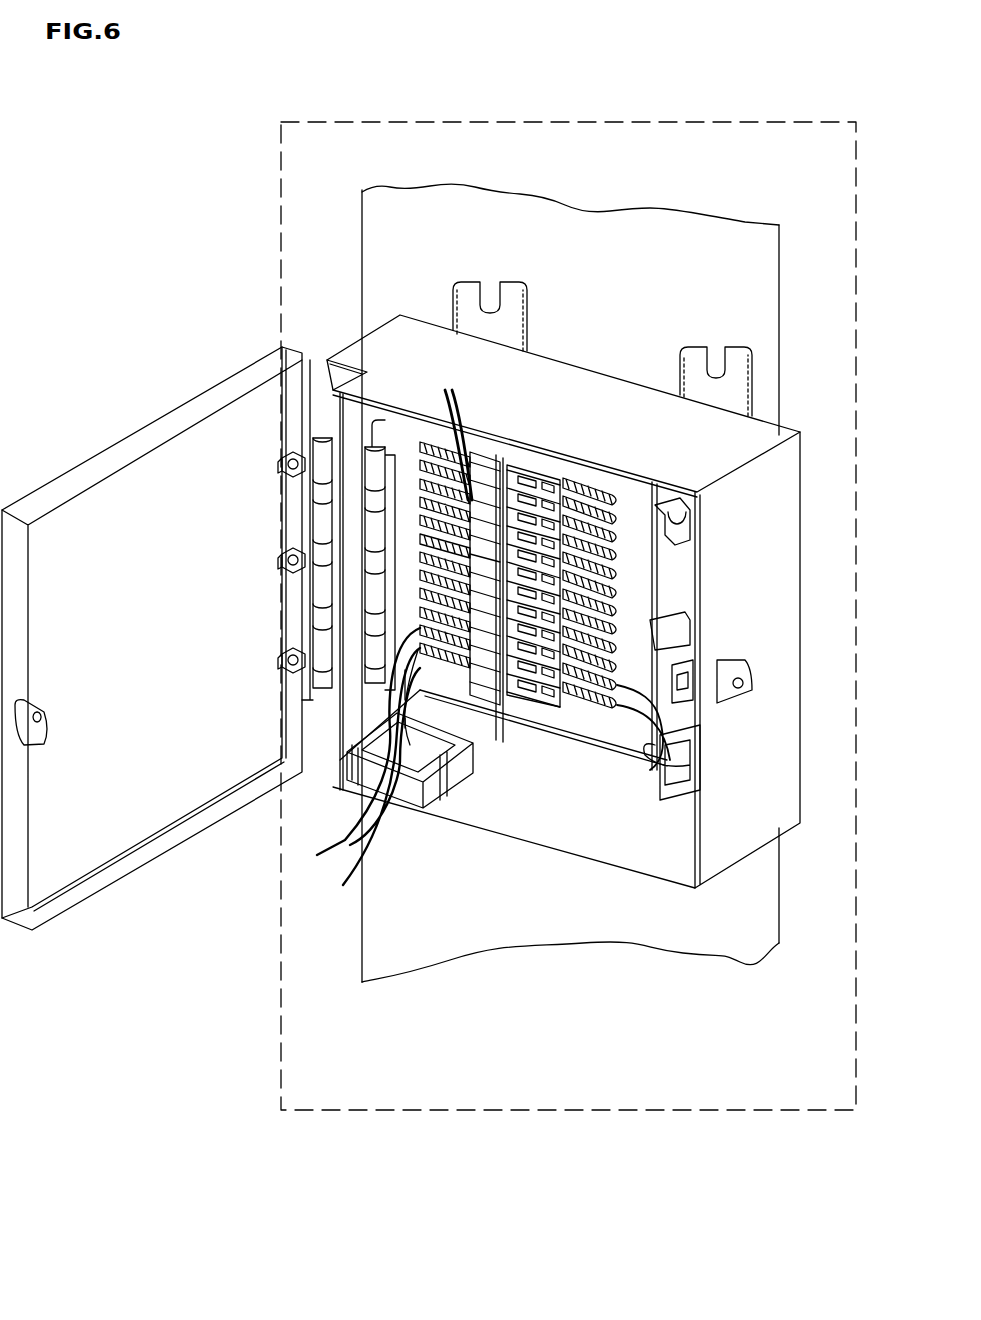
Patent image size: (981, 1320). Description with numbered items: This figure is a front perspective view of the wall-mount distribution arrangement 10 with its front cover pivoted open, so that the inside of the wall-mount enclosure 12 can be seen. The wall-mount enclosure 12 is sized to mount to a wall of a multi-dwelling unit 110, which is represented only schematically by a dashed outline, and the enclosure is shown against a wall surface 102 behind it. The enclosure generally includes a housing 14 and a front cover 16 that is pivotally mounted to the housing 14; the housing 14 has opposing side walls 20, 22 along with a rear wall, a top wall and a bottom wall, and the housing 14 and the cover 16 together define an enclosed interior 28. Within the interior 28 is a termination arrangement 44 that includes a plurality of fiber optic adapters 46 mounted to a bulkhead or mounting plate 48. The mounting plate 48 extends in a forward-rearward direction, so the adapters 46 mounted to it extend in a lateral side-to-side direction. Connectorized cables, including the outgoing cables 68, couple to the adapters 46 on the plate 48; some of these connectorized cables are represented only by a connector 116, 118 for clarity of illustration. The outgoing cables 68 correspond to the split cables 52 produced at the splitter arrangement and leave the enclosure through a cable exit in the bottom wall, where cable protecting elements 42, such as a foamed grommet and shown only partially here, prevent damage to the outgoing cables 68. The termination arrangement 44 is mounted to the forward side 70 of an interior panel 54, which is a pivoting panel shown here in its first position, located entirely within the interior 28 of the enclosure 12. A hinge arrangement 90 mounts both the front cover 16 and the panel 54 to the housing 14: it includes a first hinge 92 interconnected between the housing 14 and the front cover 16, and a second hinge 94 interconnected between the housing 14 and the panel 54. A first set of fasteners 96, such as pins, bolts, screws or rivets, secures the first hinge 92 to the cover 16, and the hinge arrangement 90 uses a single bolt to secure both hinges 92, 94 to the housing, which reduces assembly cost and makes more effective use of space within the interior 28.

The distribution arrangement 10 is at (185, 248).
The wall-mount enclosure 12 is at (152, 629).
The housing 14 is at (572, 587).
The front cover 16 is at (133, 827).
The side wall 20 is at (352, 348).
The side wall 22 is at (775, 553).
The interior 28 is at (615, 826).
The cable protecting elements 42 is at (452, 785).
The termination arrangement 44 is at (549, 596).
The fiber optic adapters 46 is at (520, 500).
The mounting plate 48 is at (513, 722).
The split cables 52 is at (660, 690).
The interior panel 54 is at (640, 558).
The outgoing cables 68 is at (353, 778).
The forward side 70 is at (620, 728).
The hinge arrangement 90 is at (296, 547).
The first hinge 92 is at (322, 580).
The second hinge 94 is at (382, 583).
The first set of fasteners 96 is at (251, 591).
The mounting plate 102 is at (663, 281).
The multi-dwelling unit 110 is at (575, 122).
The connector 116 is at (587, 528).
The connector 118 is at (444, 433).